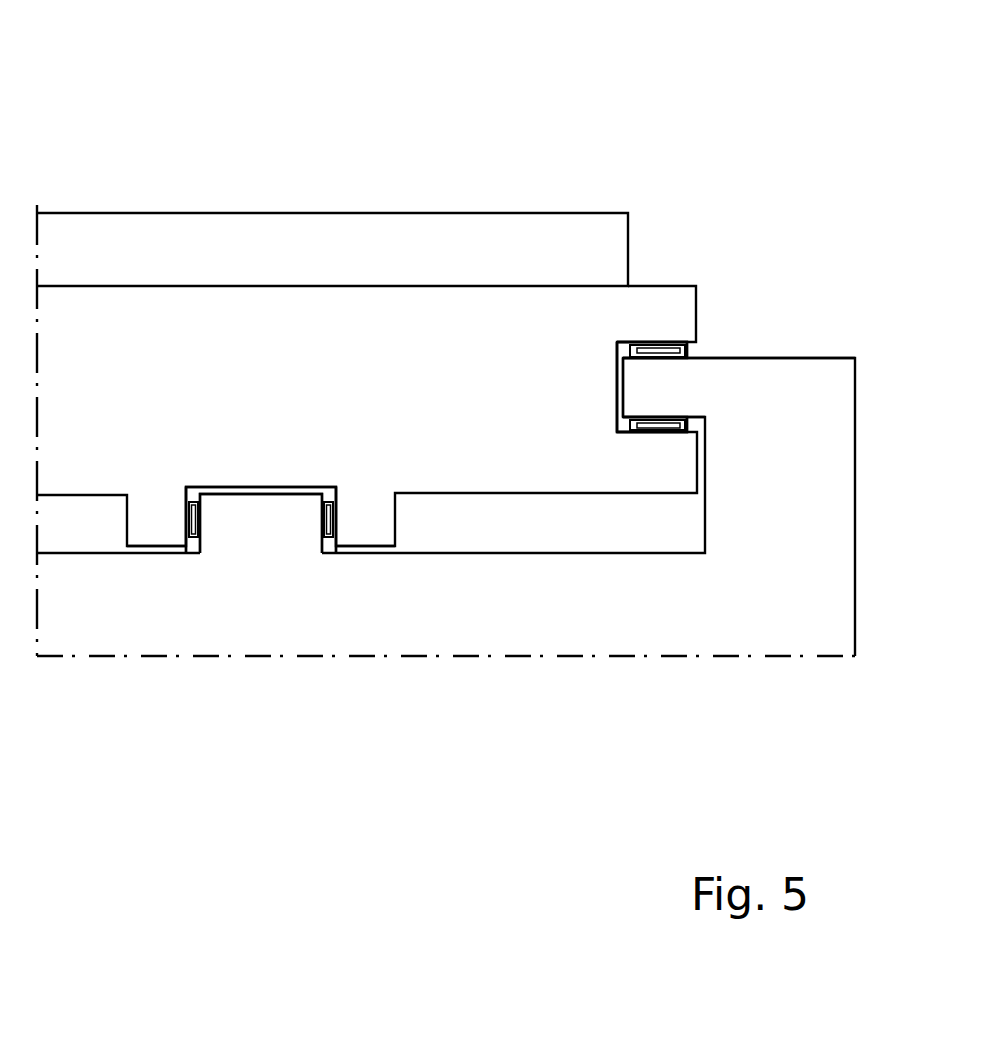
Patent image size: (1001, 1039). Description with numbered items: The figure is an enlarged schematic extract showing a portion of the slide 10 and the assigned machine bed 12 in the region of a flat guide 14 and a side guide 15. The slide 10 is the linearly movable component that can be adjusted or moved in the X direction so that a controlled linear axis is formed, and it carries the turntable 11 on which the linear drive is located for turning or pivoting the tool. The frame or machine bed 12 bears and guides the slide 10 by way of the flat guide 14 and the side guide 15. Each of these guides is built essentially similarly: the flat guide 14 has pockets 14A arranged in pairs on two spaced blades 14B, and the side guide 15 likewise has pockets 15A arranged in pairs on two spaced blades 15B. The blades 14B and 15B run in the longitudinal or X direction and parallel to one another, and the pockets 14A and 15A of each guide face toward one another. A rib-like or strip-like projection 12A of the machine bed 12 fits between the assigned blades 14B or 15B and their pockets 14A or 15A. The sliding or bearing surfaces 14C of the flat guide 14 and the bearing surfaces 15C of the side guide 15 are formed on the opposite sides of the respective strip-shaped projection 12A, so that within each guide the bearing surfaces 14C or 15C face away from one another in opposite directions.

The slide 10 is at (432, 327).
The turntable 11 is at (297, 242).
The machine bed 12 is at (767, 635).
The projection 12A is at (262, 518).
The flat guide 14 is at (609, 392).
The pocket 14A is at (673, 347).
The blade 14B is at (651, 307).
The bearing surface 14C is at (627, 347).
The side guide 15 is at (249, 483).
The pocket 15A is at (190, 526).
The blade 15B is at (140, 520).
The bearing surface 15C is at (200, 550).